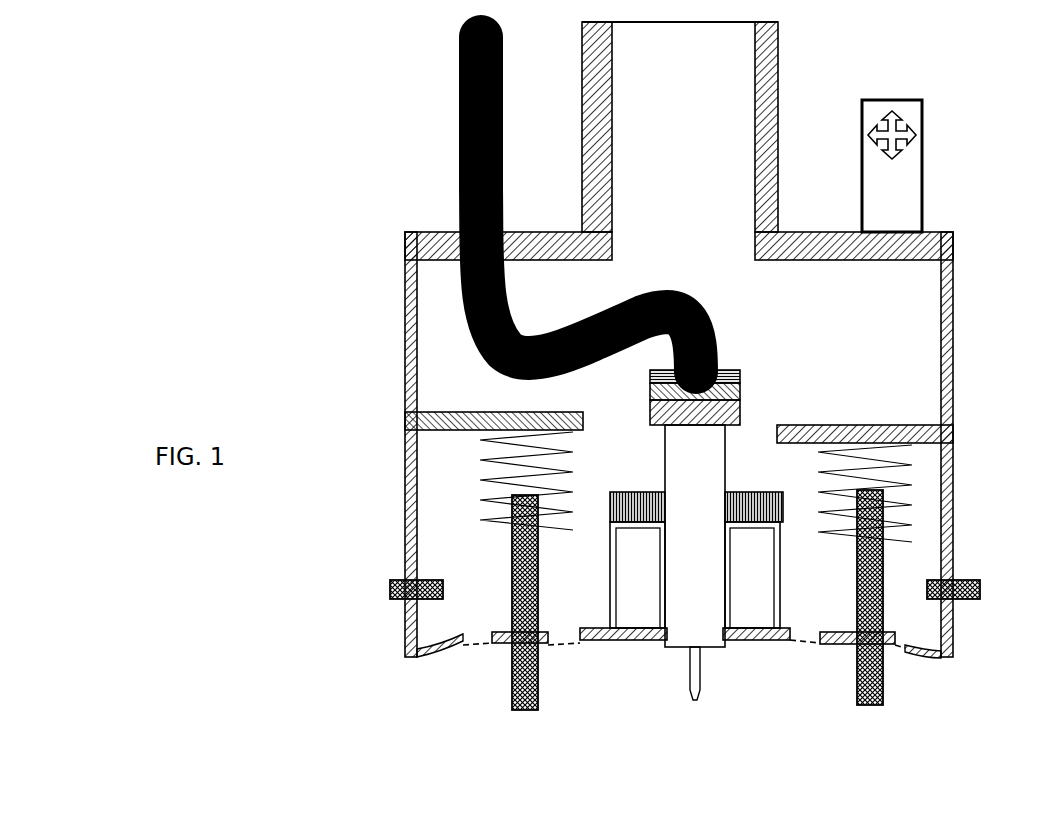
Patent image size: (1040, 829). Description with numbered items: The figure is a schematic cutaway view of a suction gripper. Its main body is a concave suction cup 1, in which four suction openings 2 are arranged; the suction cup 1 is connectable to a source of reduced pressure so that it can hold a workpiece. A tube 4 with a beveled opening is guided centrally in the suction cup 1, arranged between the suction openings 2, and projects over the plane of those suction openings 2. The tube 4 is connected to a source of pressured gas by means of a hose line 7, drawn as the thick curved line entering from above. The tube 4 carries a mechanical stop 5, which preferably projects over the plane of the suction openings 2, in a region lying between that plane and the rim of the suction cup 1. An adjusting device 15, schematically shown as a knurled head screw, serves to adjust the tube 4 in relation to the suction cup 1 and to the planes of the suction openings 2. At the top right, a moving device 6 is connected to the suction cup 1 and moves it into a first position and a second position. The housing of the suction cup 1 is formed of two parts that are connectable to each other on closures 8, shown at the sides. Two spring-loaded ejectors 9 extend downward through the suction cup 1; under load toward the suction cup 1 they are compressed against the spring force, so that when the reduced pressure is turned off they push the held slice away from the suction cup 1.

The suction cup 1 is at (403, 485).
The suction openings 2 is at (473, 655).
The tube 4 is at (688, 697).
The mechanical stop 5 is at (670, 650).
The moving device 6 is at (879, 97).
The hose line 7 is at (455, 158).
The closures 8 is at (388, 588).
The spring-loaded ejectors 9 is at (521, 714).
The adjusting device 15 is at (766, 490).